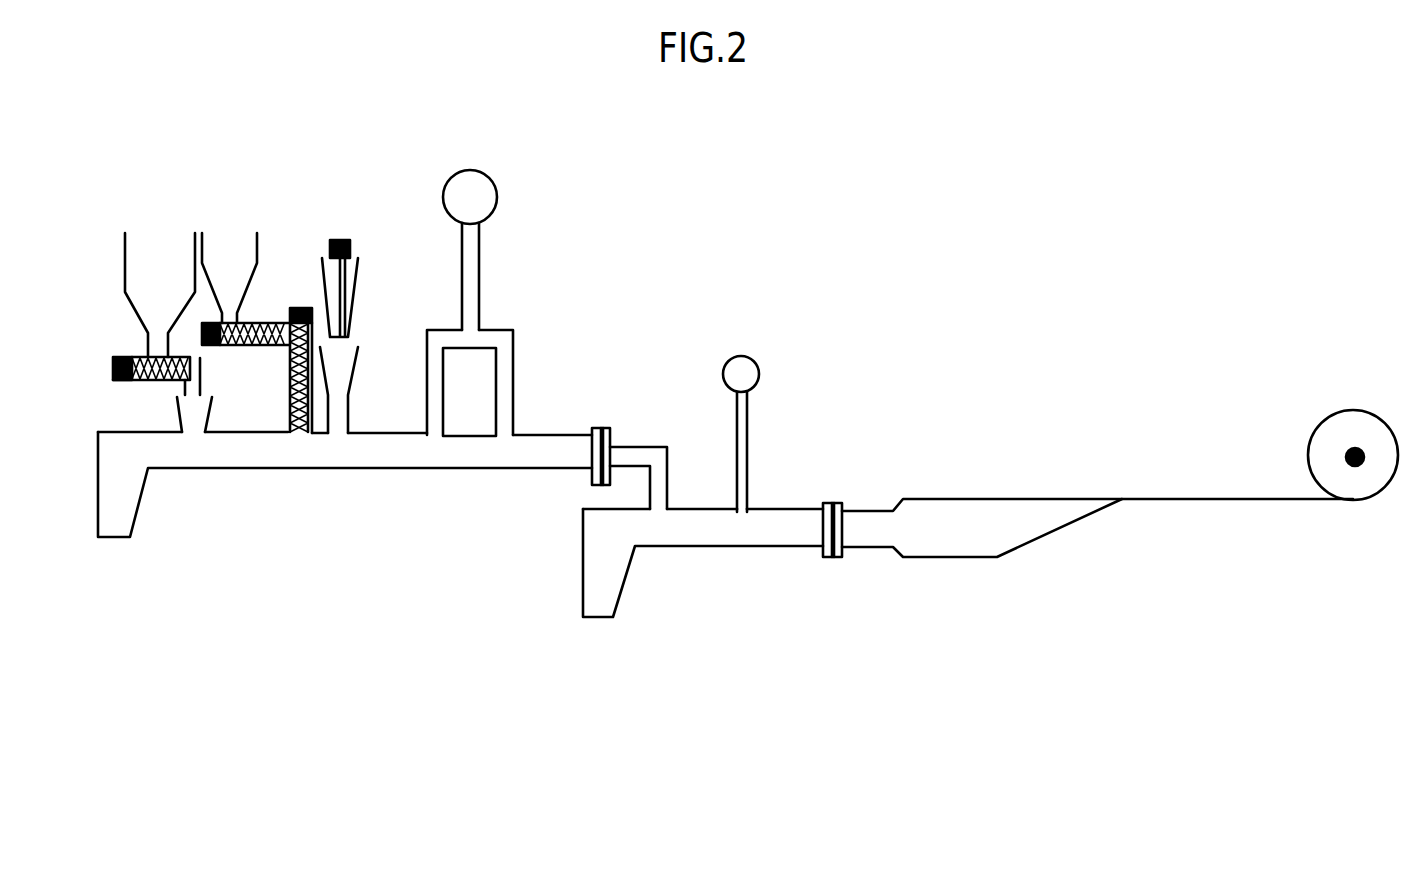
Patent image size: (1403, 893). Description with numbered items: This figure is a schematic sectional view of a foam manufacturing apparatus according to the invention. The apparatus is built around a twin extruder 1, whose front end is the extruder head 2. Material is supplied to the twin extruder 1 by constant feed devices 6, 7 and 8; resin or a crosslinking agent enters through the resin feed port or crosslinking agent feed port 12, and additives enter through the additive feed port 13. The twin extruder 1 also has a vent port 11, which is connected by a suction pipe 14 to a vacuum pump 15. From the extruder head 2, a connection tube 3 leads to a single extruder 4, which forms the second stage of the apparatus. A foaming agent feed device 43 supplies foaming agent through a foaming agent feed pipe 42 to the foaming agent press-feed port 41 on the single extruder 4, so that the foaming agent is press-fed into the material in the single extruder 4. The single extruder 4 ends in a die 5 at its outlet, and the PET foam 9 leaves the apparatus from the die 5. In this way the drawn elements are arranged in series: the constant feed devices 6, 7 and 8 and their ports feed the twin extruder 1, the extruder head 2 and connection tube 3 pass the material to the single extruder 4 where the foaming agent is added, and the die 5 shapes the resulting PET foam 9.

The twin extruder 1 is at (140, 503).
The extruder head 2 is at (602, 428).
The connection tube 3 is at (667, 478).
The single extruder 4 is at (710, 547).
The die 5 is at (872, 512).
The constant feed device 6 is at (200, 360).
The constant feed device 7 is at (262, 322).
The constant feed device 8 is at (347, 317).
The PET foam 9 is at (1313, 462).
The vent port 11 is at (436, 438).
The resin feed port or crosslinking agent feed port 12 is at (192, 432).
The additive feed port 13 is at (338, 427).
The suction pipe 14 is at (479, 303).
The vacuum pump 15 is at (490, 192).
The foaming agent press-feed port 41 is at (740, 510).
The foaming agent feed pipe 42 is at (747, 440).
The foaming agent feed device 43 is at (758, 375).